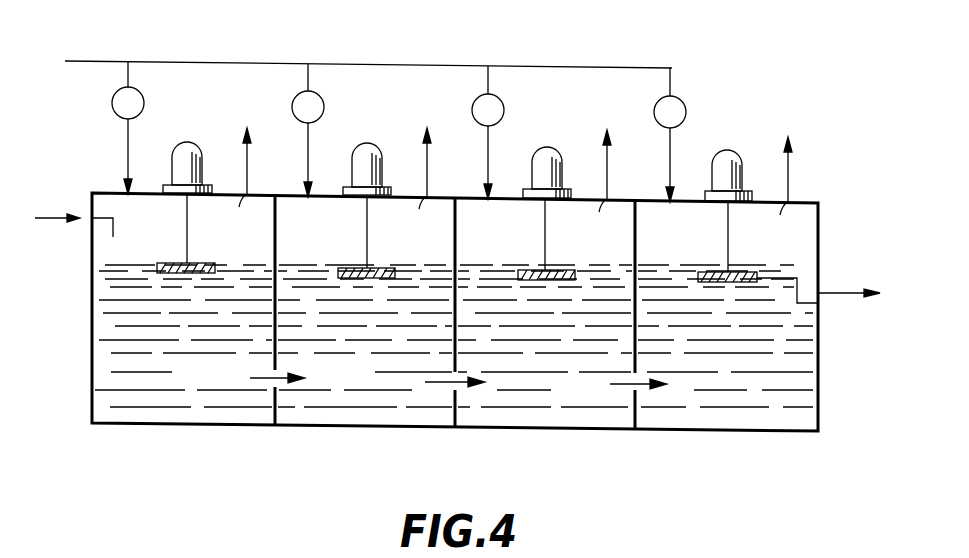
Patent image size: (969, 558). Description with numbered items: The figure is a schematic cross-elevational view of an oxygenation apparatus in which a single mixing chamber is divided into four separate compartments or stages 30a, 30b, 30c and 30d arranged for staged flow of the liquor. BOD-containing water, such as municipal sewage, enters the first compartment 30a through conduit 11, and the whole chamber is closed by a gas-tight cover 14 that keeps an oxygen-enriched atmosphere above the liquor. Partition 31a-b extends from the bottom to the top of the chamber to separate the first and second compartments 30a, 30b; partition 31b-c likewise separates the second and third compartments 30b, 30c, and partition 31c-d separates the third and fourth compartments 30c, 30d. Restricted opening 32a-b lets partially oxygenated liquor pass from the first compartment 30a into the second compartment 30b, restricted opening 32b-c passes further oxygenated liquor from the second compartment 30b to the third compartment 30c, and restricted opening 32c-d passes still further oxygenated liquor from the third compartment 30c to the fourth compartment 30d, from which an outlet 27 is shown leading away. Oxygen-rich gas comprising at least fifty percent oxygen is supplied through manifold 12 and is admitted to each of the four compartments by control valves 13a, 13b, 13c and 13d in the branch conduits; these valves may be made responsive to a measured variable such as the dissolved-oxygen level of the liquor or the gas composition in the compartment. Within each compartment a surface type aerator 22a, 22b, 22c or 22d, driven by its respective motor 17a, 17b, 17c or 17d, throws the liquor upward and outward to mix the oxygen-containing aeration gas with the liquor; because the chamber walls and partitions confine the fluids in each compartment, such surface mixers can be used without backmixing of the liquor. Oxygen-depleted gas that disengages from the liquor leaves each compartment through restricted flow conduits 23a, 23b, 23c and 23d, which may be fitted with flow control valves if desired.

The conduit 11 is at (42, 216).
The manifold 12 is at (79, 59).
The control valve 13a is at (111, 103).
The control valve 13b is at (292, 111).
The control valve 13c is at (472, 109).
The control valve 13d is at (655, 111).
The gas-tight cover 14 is at (285, 194).
The motor 17a is at (186, 150).
The motor 17b is at (367, 152).
The motor 17c is at (547, 156).
The motor 17d is at (727, 159).
The surface type aerator 22a is at (161, 262).
The surface type aerator 22b is at (349, 267).
The surface type aerator 22c is at (526, 269).
The surface type aerator 22d is at (706, 271).
The restricted flow conduit 23a is at (236, 183).
The restricted flow conduit 23b is at (415, 184).
The restricted flow conduit 23c is at (602, 184).
The restricted flow conduit 23d is at (781, 190).
The liquid outlet 27 is at (839, 290).
The first compartment 30a is at (135, 412).
The second compartment 30b is at (351, 416).
The third compartment 30c is at (558, 418).
The fourth compartment 30d is at (729, 421).
The partition 31a-b is at (273, 250).
The partition 31b-c is at (453, 252).
The partition 31c-d is at (633, 253).
The restricted opening 32a-b is at (271, 386).
The restricted opening 32b-c is at (450, 390).
The restricted opening 32c-d is at (632, 393).